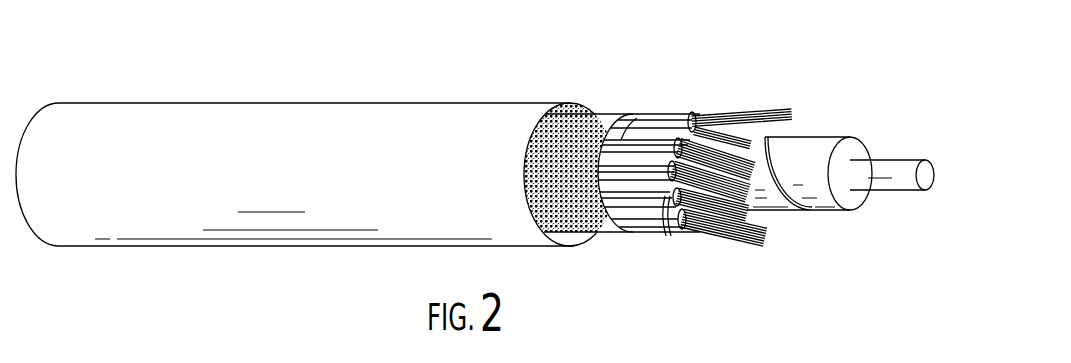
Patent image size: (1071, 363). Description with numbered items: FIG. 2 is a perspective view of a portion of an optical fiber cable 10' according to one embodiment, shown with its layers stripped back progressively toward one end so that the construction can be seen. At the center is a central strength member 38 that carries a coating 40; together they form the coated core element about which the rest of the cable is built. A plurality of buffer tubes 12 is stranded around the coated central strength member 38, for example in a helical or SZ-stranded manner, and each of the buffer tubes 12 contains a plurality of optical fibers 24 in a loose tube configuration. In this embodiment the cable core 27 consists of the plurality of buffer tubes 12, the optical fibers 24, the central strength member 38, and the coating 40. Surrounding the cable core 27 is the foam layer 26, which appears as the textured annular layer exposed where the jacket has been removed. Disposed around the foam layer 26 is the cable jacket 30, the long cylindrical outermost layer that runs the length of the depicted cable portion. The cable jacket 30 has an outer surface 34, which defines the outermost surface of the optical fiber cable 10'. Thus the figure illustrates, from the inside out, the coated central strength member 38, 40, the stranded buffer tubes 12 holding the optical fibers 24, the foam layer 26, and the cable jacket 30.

The optical fiber cable 10' is at (475, 125).
The cable jacket 30 is at (357, 125).
The outer surface 34 is at (259, 183).
The foam layer 26 is at (603, 116).
The buffer tube 12 is at (660, 138).
The cable core 27 is at (725, 103).
The optical fibers 24 is at (795, 132).
The coating 40 is at (817, 153).
The central strength member 38 is at (885, 162).